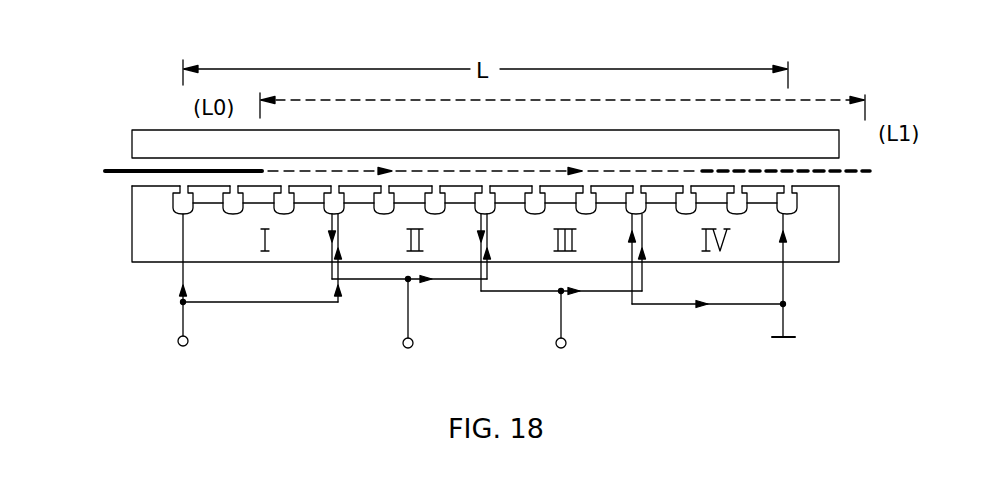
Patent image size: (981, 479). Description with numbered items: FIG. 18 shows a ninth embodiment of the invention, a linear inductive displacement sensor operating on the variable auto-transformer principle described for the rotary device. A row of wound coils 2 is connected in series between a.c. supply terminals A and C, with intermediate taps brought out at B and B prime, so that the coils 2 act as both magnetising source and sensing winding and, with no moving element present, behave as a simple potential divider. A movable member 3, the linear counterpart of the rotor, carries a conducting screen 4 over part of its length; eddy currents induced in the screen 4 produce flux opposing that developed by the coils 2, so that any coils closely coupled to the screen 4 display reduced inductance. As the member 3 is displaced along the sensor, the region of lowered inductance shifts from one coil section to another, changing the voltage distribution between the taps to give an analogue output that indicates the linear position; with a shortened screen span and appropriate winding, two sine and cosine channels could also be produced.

The coils 2 is at (484, 101).
The rotor 3 is at (534, 283).
The conducting screen 4 is at (440, 113).